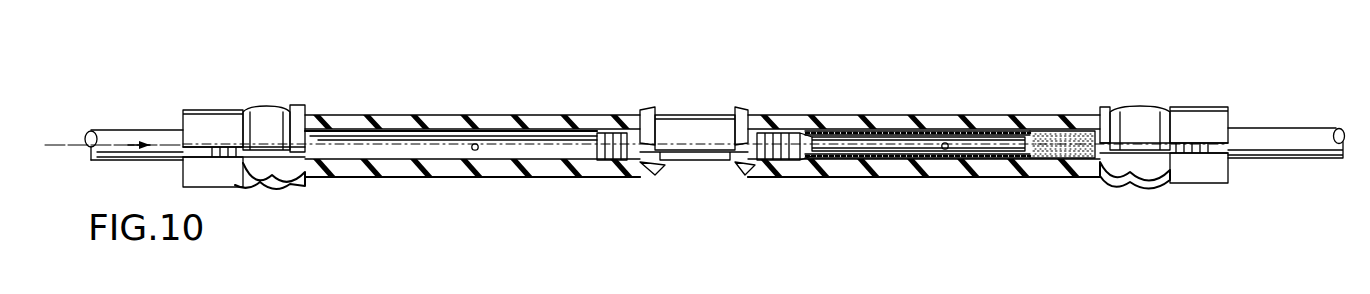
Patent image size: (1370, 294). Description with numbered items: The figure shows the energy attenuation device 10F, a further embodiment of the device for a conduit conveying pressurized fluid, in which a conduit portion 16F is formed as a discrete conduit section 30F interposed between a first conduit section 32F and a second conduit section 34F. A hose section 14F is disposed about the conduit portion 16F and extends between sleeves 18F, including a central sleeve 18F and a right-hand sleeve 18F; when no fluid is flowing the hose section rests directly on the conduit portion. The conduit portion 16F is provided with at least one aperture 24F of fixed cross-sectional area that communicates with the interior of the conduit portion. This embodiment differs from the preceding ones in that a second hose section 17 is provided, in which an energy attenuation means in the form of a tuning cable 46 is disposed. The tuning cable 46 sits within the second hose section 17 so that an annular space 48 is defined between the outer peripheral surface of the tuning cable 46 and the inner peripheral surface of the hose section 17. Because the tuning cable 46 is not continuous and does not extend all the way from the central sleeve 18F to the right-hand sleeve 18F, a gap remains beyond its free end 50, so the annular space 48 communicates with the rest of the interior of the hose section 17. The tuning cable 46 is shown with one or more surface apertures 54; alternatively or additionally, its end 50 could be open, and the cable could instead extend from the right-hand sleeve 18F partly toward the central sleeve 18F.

The energy attenuation device 10F is at (790, 95).
The hose section 14F is at (442, 116).
The conduit portion 16F is at (395, 150).
The second hose section 17 is at (1032, 117).
The sleeve 18F is at (697, 112).
The aperture 24F is at (478, 144).
The discrete conduit section 30F is at (545, 150).
The first conduit section 32F is at (147, 128).
The second conduit section 34F is at (1298, 157).
The tuning cable 46 is at (885, 150).
The annular space 48 is at (925, 152).
The free end of the tuning cable 50 is at (1043, 150).
The surface aperture 54 is at (945, 142).